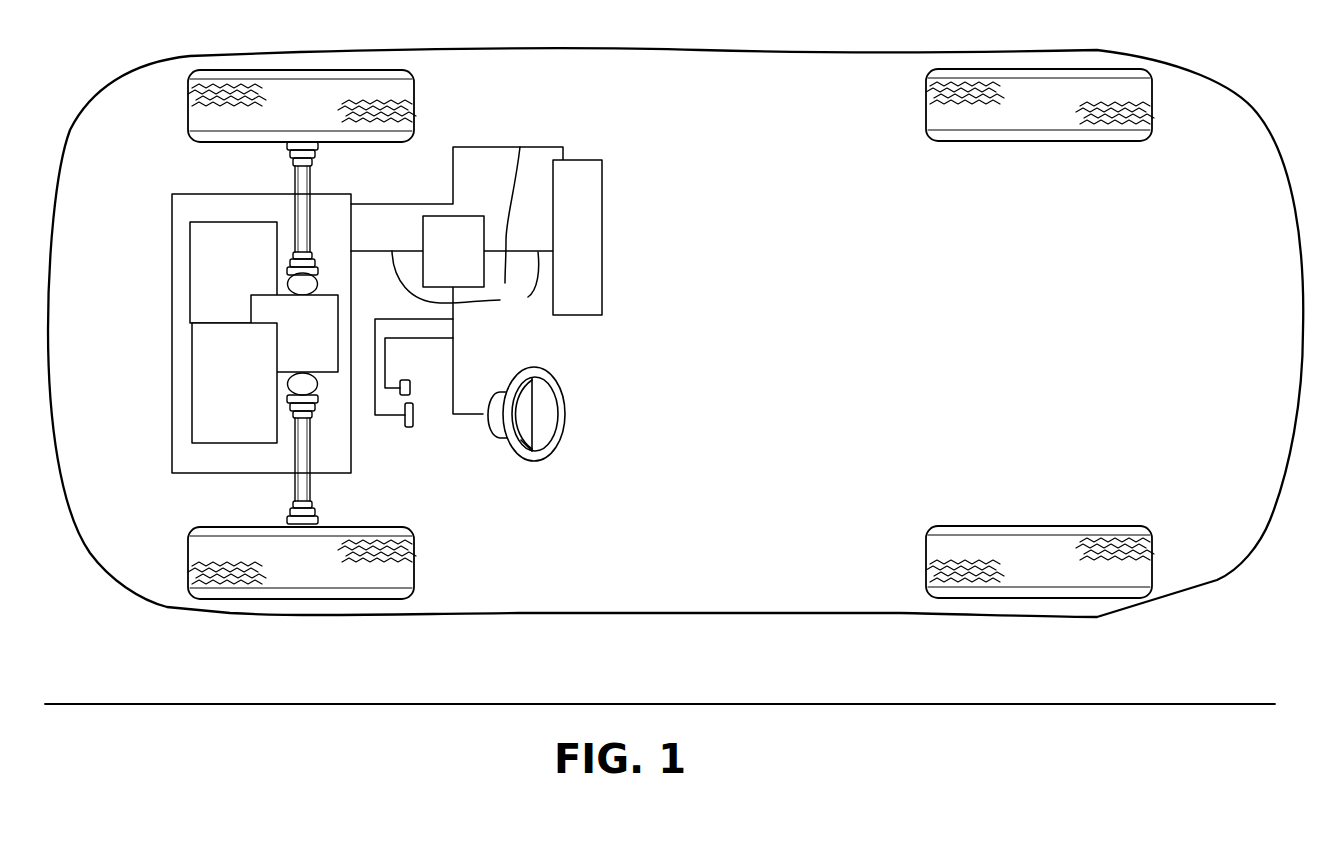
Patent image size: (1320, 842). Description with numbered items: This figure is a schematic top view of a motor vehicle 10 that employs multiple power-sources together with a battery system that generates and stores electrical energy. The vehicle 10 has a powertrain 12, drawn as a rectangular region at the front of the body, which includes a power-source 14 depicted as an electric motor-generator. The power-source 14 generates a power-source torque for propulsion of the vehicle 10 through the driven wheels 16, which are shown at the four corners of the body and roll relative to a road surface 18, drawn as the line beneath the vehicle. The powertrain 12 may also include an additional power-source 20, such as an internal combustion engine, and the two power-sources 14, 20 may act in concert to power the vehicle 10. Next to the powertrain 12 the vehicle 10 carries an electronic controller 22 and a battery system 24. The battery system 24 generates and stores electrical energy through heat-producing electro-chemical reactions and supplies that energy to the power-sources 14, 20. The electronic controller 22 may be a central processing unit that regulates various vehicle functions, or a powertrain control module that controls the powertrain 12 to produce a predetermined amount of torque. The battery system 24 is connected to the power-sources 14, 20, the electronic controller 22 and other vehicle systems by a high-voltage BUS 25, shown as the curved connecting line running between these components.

The motor vehicle 10 is at (624, 616).
The powertrain 12 is at (360, 436).
The power-source 14 is at (221, 265).
The driven wheels 16 is at (407, 98).
The road surface 18 is at (1203, 655).
The additional power-source 20 is at (222, 385).
The electronic controller 22 is at (442, 261).
The battery system 24 is at (567, 261).
The high-voltage BUS 25 is at (465, 281).